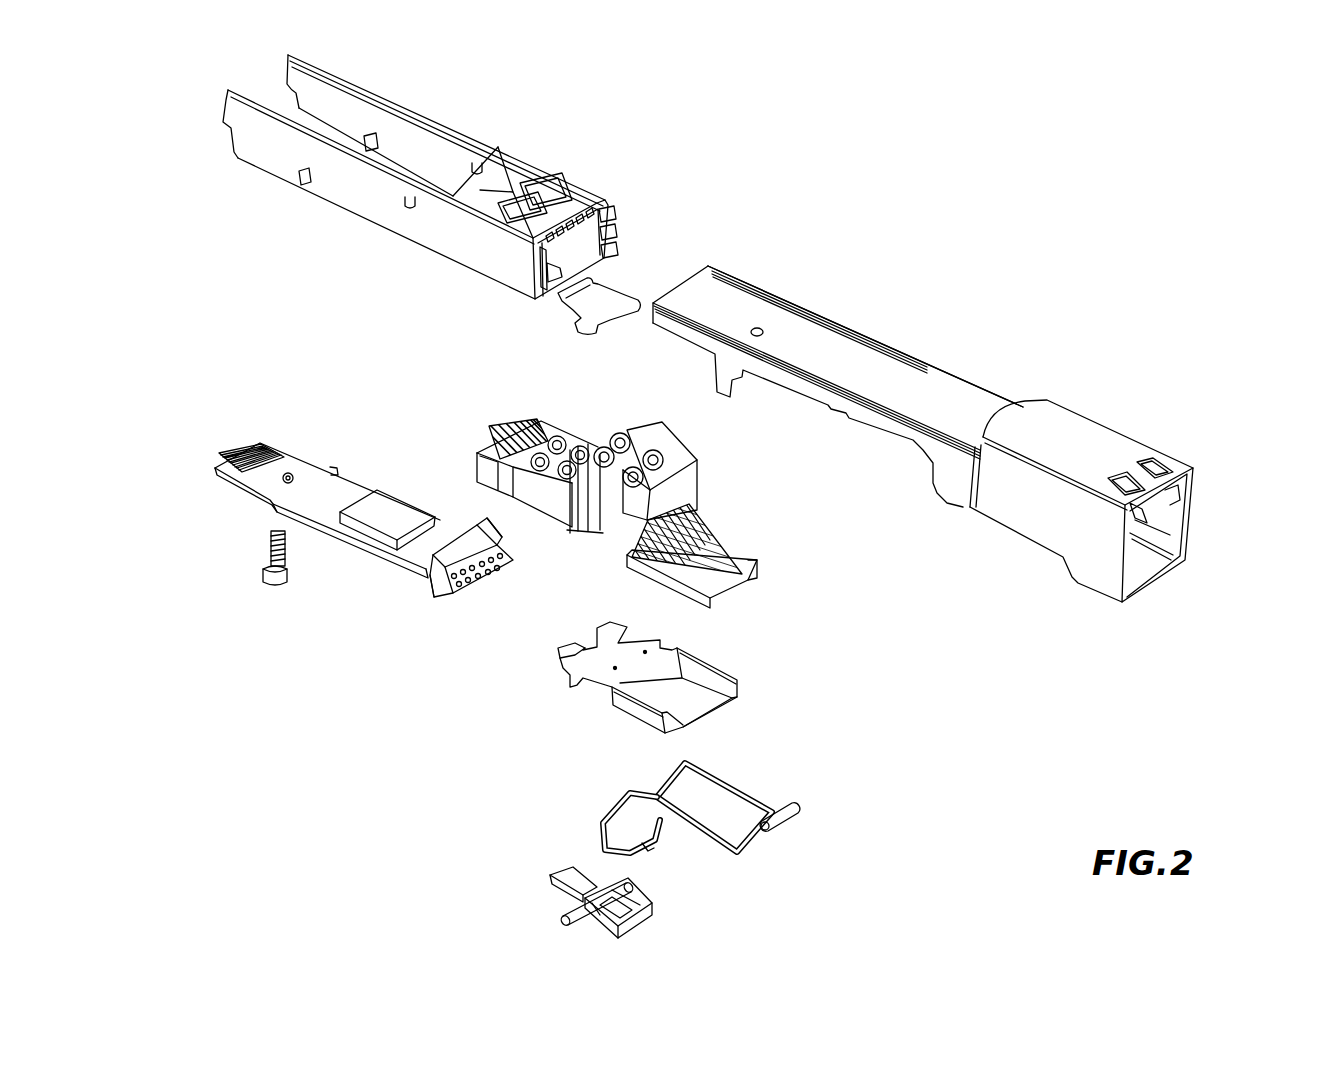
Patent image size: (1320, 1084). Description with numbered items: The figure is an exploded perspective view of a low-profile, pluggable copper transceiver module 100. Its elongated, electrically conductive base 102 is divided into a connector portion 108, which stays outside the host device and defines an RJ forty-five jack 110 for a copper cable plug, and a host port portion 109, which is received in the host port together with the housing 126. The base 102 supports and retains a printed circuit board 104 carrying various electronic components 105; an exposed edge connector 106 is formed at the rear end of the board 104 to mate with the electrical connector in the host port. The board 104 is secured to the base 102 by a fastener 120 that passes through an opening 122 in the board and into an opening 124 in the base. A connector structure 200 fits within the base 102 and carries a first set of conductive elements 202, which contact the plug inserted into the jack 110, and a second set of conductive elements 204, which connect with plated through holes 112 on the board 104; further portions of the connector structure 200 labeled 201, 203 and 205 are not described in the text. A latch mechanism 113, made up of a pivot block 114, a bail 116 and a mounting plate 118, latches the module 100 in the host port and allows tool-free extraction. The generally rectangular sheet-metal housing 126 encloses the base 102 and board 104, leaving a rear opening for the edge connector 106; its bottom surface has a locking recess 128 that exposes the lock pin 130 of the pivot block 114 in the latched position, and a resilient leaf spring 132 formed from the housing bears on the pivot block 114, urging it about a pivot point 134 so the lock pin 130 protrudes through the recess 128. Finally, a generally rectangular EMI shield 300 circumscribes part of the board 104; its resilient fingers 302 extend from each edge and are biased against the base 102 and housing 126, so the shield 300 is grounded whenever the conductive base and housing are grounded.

The transceiver module 100 is at (1038, 199).
The base 102 is at (845, 440).
The printed circuit board 104 is at (353, 565).
The electronic components 105 is at (368, 507).
The edge connector 106 is at (262, 434).
The connector portion 108 is at (1065, 384).
The host port portion 109 is at (731, 262).
The RJ-45 jack 110 is at (1158, 518).
The plated through holes 112 is at (476, 604).
The latch mechanism 113 is at (803, 675).
The pivot block 114 is at (640, 904).
The bail 116 is at (727, 777).
The mounting plate 118 is at (627, 708).
The fastener 120 is at (263, 563).
The opening 122 is at (290, 470).
The opening 124 is at (758, 327).
The housing 126 is at (365, 231).
The locking recess 128 is at (553, 276).
The lock pin 130 is at (558, 892).
The leaf spring 132 is at (604, 316).
The pivot point 134 is at (568, 908).
The connector structure 200 is at (595, 547).
The post 201 is at (600, 505).
The first set of conductive elements 202 is at (730, 600).
The optical block 203 is at (763, 552).
The second set of conductive elements 204 is at (478, 447).
The lens array 205 is at (528, 415).
The EMI shield 300 is at (433, 611).
The fingers 302 is at (472, 520).